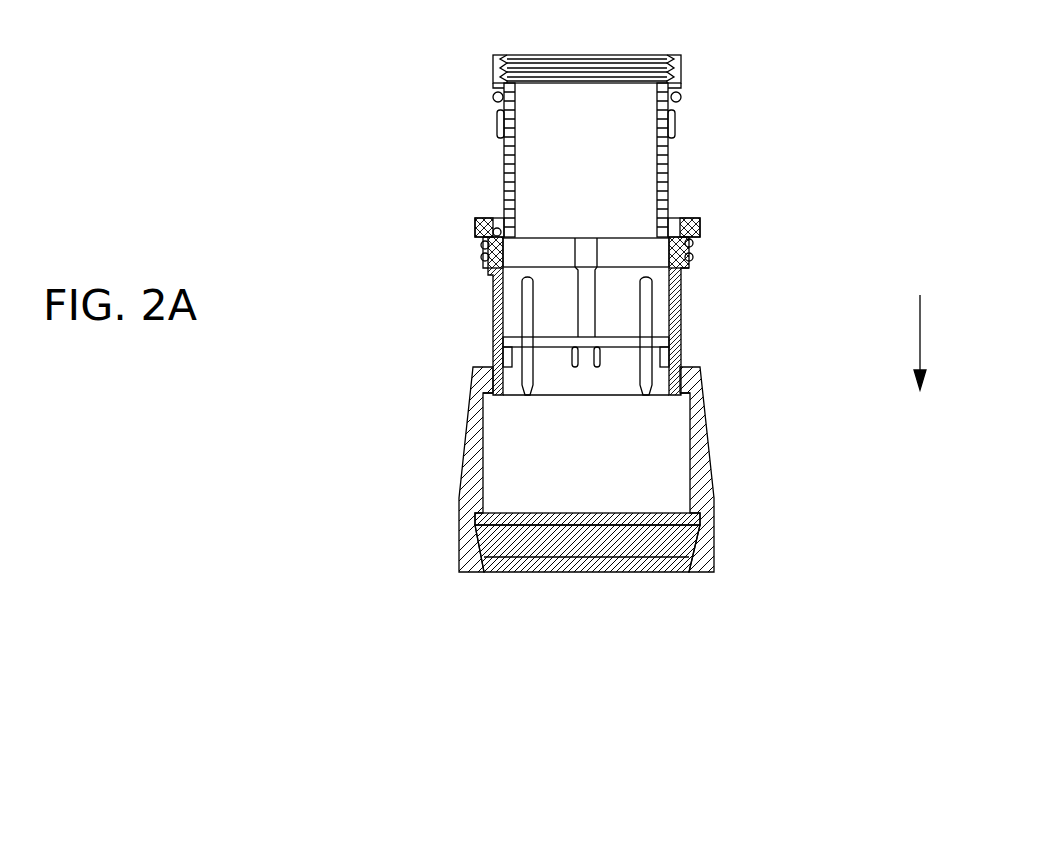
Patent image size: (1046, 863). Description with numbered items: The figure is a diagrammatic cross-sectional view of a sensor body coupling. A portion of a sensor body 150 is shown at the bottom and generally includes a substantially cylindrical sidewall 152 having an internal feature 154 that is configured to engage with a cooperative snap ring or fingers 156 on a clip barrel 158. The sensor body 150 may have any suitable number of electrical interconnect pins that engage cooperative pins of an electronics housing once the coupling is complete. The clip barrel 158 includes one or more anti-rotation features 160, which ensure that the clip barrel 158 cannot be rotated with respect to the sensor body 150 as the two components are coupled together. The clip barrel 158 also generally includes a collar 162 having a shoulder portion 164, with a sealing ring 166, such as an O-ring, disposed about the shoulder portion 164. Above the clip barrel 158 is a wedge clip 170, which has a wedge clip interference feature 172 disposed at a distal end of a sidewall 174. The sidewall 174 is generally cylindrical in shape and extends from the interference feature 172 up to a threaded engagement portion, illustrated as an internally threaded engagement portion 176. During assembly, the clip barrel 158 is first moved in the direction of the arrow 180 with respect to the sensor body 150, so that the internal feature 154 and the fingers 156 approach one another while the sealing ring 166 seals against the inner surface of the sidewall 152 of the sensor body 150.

The sensor body 150 is at (644, 494).
The sidewall 152 is at (710, 460).
The internal feature 154 is at (692, 527).
The fingers 156 is at (690, 392).
The clip barrel 158 is at (692, 328).
The anti-rotation features 160 is at (577, 330).
The collar 162 is at (702, 231).
The shoulder portion 164 is at (694, 250).
The sealing ring 166 is at (481, 252).
The wedge clip 170 is at (581, 118).
The wedge clip interference feature 172 is at (745, 205).
The sidewall 174 is at (504, 180).
The internally threaded engagement portion 176 is at (663, 62).
The arrow 180 is at (920, 357).